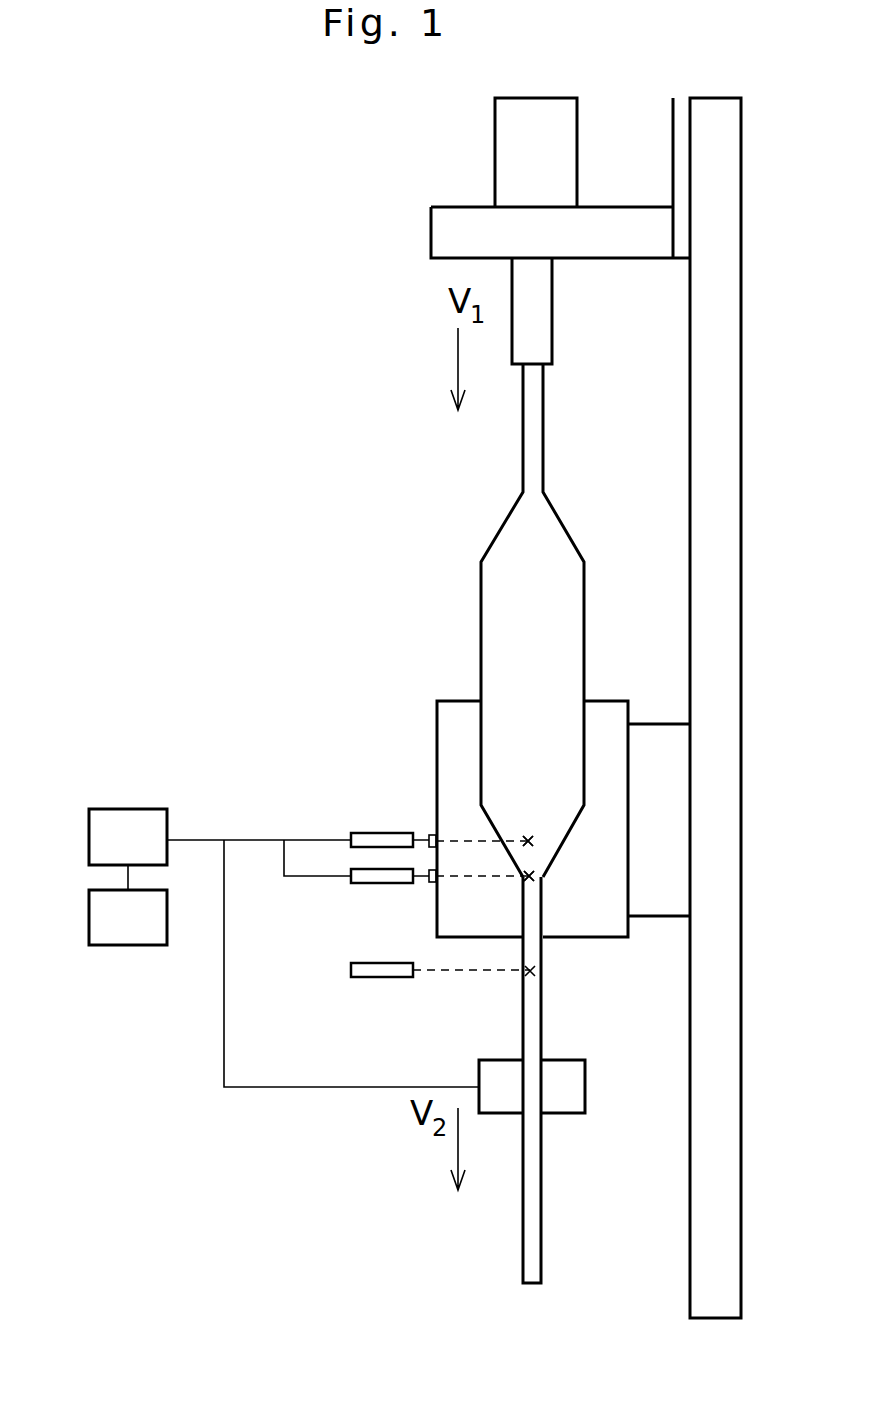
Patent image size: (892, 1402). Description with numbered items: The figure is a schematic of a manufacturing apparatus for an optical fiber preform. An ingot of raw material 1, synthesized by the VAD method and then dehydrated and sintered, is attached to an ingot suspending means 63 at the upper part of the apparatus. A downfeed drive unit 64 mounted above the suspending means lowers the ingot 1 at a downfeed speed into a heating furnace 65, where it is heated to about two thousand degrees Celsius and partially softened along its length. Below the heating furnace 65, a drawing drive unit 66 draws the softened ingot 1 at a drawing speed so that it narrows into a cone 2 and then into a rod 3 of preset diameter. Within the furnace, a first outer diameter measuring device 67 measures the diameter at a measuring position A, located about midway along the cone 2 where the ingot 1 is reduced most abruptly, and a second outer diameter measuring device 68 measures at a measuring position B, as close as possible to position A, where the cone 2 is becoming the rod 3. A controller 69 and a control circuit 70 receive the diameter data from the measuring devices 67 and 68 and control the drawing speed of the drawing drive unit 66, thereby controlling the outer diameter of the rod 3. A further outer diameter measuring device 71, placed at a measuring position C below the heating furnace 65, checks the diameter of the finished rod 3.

The ingot of raw material 1 is at (500, 612).
The cone 2 is at (508, 830).
The rod 3 is at (532, 1216).
The ingot suspending means 63 is at (535, 324).
The downfeed drive unit 64 is at (535, 141).
The heating furnace 65 is at (455, 730).
The drawing drive unit 66 is at (572, 1078).
The first outer diameter measuring device 67 is at (378, 838).
The second outer diameter measuring device 68 is at (378, 878).
The controller 69 is at (130, 822).
The control circuit 70 is at (132, 932).
The outer diameter measuring device 71 is at (380, 968).
The measuring position A is at (534, 838).
The measuring position B is at (535, 876).
The measuring position C is at (536, 970).